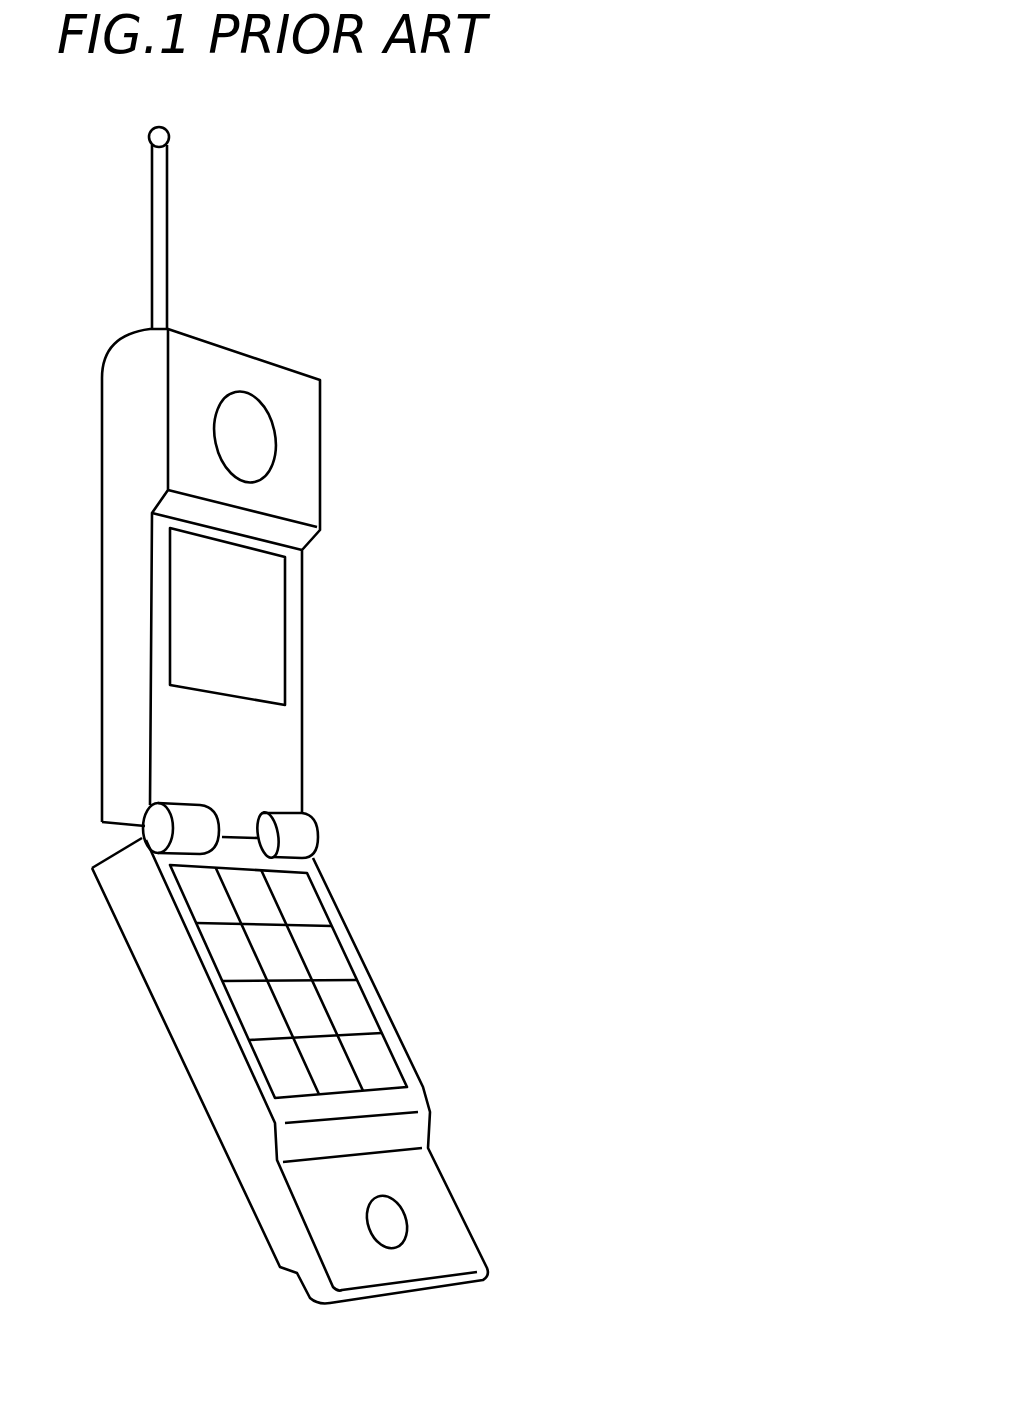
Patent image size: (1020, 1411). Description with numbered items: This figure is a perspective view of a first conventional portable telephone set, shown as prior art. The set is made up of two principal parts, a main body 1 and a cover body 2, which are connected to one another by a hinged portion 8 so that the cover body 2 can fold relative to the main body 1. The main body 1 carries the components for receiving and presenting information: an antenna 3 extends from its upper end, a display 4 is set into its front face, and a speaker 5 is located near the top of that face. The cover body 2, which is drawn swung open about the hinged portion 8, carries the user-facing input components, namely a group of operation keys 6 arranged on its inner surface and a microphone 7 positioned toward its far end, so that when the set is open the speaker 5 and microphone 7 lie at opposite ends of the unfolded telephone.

The main body 1 is at (277, 755).
The cover body 2 is at (417, 1090).
The antenna 3 is at (165, 250).
The display 4 is at (267, 623).
The speaker 5 is at (262, 452).
The operation keys 6 is at (330, 957).
The microphone 7 is at (395, 1223).
The hinged portion 8 is at (307, 837).